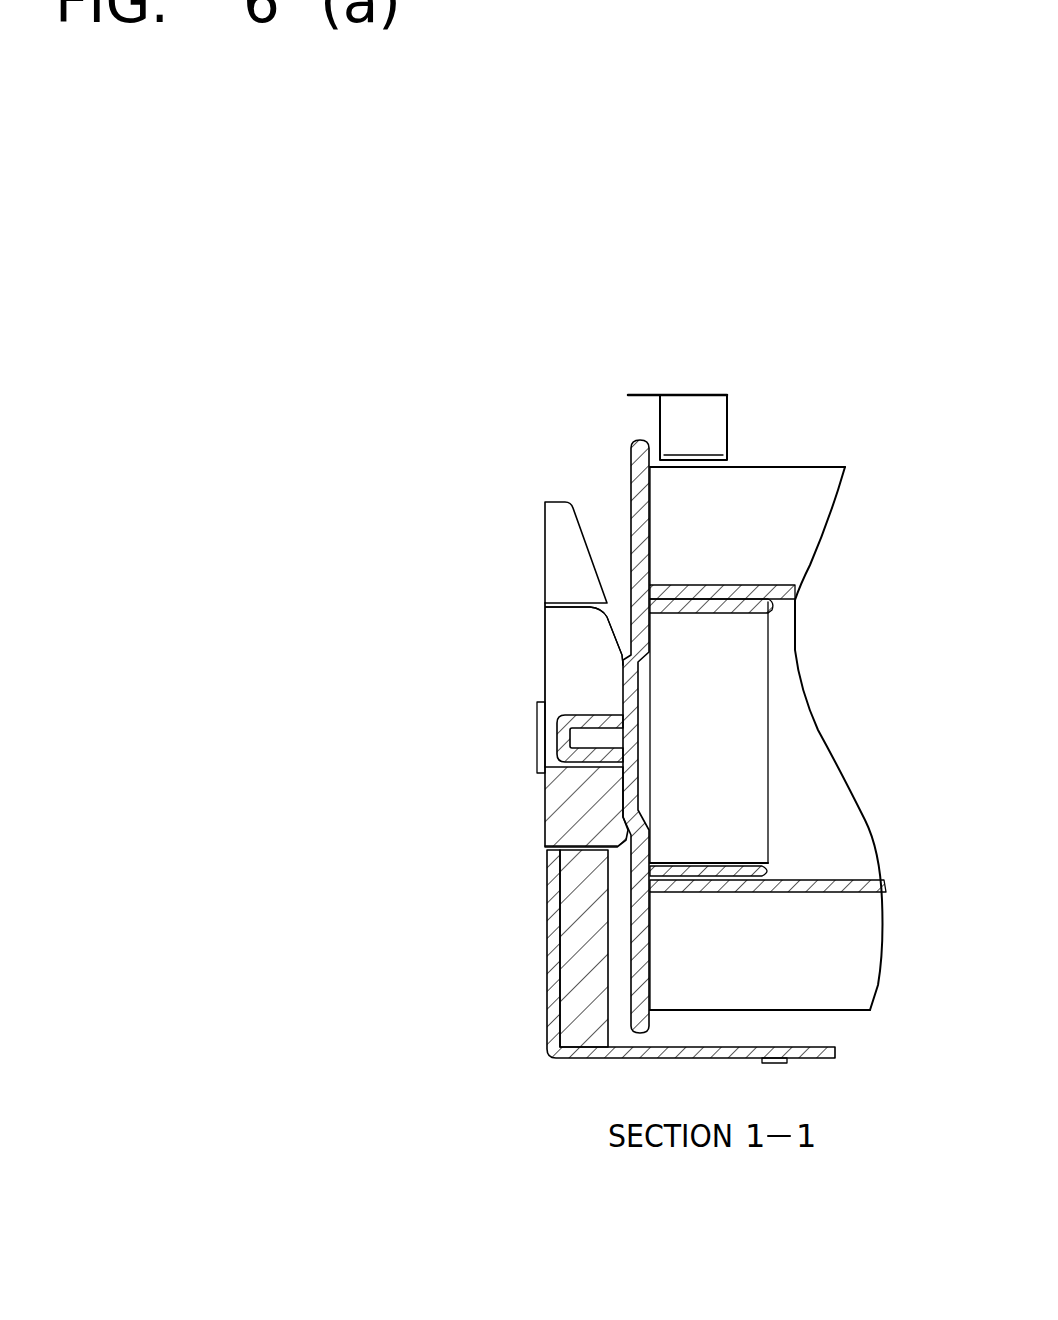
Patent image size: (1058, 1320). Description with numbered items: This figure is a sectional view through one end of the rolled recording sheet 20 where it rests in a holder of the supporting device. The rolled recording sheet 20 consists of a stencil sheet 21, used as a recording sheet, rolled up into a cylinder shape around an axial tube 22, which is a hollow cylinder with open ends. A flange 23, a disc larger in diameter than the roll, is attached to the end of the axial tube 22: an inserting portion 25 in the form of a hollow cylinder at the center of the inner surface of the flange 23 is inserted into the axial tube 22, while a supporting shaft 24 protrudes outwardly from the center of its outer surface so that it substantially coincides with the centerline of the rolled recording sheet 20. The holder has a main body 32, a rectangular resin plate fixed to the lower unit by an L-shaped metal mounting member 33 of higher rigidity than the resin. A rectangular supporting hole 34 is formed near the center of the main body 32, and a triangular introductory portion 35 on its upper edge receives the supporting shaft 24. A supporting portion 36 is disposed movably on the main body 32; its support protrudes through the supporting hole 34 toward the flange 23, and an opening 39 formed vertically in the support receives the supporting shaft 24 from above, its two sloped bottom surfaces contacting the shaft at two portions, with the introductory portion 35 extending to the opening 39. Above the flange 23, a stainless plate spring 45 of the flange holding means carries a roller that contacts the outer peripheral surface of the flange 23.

The rolled recording sheet 20 is at (768, 398).
The stencil sheet 21 is at (815, 478).
The axial tube 22 is at (795, 590).
The flange 23 is at (631, 463).
The supporting shaft 24 is at (585, 712).
The inserting portion 25 is at (768, 788).
The main body 32 is at (555, 1057).
The mounting member 33 is at (830, 1058).
The supporting hole 34 is at (575, 841).
The introductory portion 35 is at (552, 538).
The supporting portion 36 is at (555, 628).
The opening 39 is at (555, 628).
The plate spring 45 is at (693, 413).